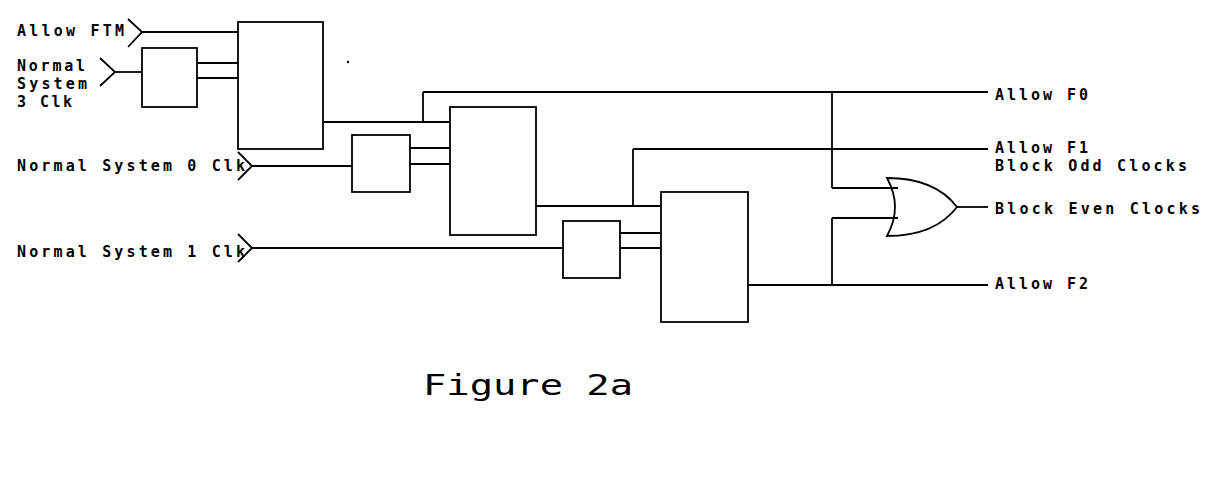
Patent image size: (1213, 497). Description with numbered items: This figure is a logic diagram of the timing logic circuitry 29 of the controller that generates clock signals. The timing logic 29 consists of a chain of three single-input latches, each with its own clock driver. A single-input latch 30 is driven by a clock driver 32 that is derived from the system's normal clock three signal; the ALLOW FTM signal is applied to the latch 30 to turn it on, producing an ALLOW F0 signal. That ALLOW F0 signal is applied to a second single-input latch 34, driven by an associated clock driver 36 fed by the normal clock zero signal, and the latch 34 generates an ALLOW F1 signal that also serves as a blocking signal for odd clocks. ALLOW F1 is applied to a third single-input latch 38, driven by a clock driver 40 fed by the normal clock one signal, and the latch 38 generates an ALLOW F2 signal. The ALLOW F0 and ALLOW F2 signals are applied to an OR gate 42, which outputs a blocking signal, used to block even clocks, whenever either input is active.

The timing logic circuitry 29 is at (593, 108).
The single-input latch 30 is at (288, 131).
The clock driver 32 is at (152, 108).
The second single-input latch 34 is at (501, 215).
The clock driver 36 is at (362, 193).
The third single-input latch 38 is at (710, 303).
The clock driver 40 is at (572, 279).
The OR gate 42 is at (934, 215).